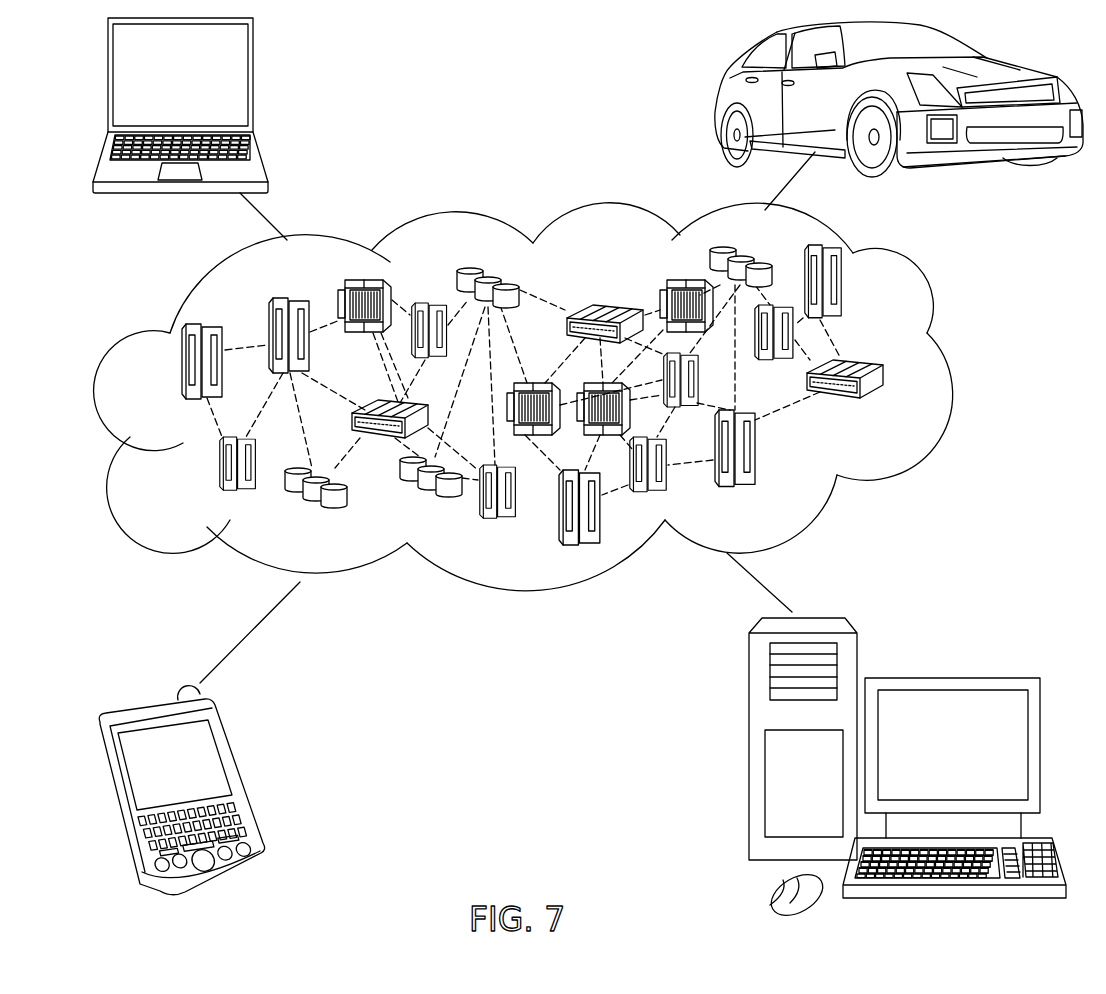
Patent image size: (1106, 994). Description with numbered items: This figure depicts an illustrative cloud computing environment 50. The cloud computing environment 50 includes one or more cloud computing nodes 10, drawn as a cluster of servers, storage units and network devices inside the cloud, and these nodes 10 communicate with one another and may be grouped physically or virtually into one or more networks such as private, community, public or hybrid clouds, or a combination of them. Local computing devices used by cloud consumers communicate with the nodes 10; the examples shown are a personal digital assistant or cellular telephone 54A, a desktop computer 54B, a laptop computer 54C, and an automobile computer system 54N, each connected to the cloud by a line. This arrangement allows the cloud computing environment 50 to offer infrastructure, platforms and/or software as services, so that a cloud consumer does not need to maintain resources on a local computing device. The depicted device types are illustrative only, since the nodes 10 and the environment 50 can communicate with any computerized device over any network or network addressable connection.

The cloud computing nodes 10 is at (903, 406).
The cloud computing environment 50 is at (950, 372).
The personal digital assistant or cellular telephone 54A is at (243, 778).
The desktop computer 54B is at (949, 678).
The laptop computer 54C is at (253, 82).
The automobile computer system 54N is at (720, 99).